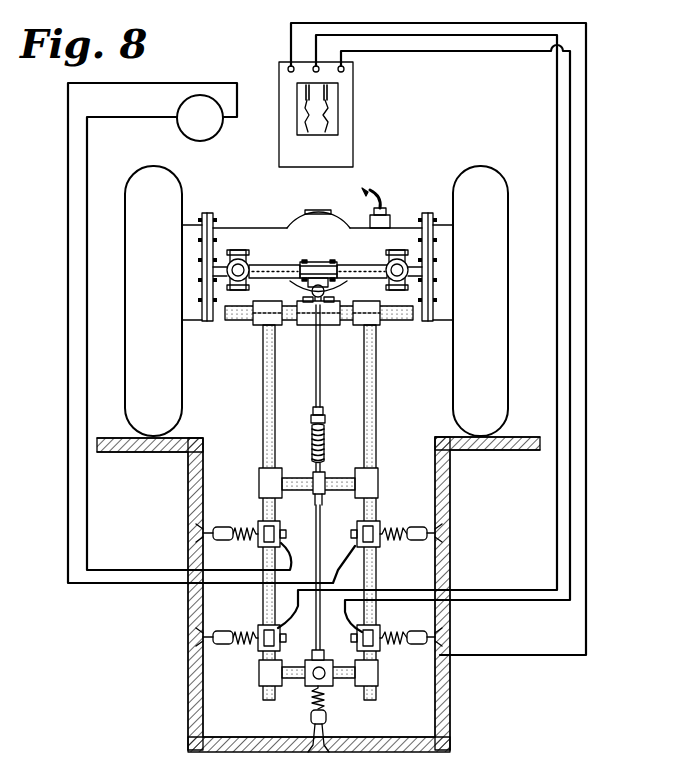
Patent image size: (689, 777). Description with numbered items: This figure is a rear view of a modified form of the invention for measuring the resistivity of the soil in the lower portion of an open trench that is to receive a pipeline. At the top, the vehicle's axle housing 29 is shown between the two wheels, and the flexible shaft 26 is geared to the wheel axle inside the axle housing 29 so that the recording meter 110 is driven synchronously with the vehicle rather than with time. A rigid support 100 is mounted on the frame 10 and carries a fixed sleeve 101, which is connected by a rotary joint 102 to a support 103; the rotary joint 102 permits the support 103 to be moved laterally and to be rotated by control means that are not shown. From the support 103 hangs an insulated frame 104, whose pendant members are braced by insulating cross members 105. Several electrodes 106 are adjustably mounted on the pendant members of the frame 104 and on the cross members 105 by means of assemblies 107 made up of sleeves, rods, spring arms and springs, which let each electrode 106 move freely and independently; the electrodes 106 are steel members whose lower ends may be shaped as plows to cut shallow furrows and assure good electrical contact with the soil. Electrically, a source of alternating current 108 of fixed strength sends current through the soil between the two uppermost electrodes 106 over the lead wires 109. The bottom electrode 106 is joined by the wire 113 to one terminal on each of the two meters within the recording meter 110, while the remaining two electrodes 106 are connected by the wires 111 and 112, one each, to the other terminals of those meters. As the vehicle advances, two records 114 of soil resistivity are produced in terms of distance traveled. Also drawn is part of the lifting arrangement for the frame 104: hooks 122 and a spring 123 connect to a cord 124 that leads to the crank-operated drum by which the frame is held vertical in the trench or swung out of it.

The frame 10 is at (238, 262).
The flexible shaft 26 is at (378, 188).
The axle housing 29 is at (262, 228).
The rigid support 100 is at (265, 265).
The fixed sleeve 101 is at (316, 262).
The rotary joint 102 is at (327, 295).
The support 103 is at (394, 322).
The insulated frame 104 is at (263, 367).
The insulating cross members 105 is at (333, 478).
The electrodes 106 is at (200, 533).
The assemblies 107 is at (398, 524).
The source of alternating current 108 is at (211, 137).
The lead wires 109 is at (87, 534).
The recording meter 110 is at (360, 138).
The wire 111 is at (516, 40).
The wire 112 is at (400, 51).
The wire 113 is at (462, 22).
The records 114 is at (305, 110).
The hooks 122 is at (324, 420).
The spring 123 is at (311, 440).
The cord 124 is at (320, 372).